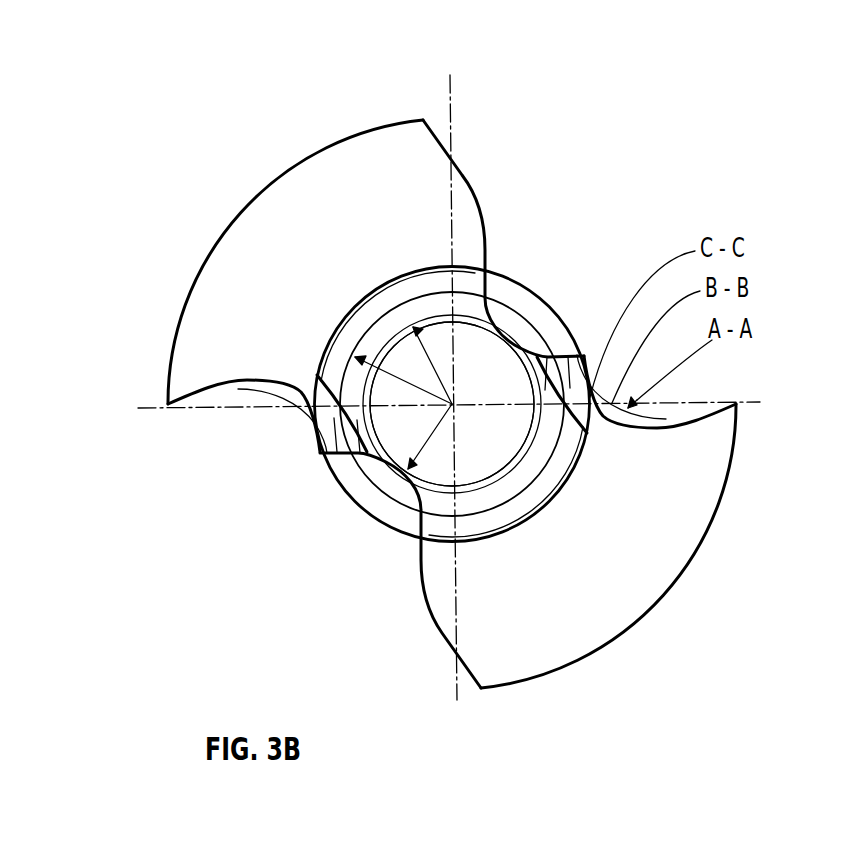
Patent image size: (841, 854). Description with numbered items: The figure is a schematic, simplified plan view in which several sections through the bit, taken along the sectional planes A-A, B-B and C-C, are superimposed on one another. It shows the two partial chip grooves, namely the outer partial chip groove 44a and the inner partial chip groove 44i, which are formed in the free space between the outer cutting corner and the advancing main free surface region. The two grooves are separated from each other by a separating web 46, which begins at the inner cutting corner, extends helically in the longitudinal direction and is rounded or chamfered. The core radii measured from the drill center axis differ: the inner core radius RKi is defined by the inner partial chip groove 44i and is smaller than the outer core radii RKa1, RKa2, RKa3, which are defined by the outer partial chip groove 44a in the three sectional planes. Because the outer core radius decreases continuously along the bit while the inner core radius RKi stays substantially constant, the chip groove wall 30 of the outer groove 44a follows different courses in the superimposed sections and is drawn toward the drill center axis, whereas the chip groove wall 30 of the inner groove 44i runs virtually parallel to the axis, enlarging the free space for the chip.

The chip groove wall 30 is at (479, 378).
The outer partial chip groove 44a is at (478, 407).
The inner partial chip groove 44i is at (421, 387).
The separating web 46 is at (415, 367).
The outer core radius RKa1 is at (312, 290).
The outer core radius RKa2 is at (357, 247).
The outer core radius RKa3 is at (452, 277).
The inner core radius RKi is at (405, 520).